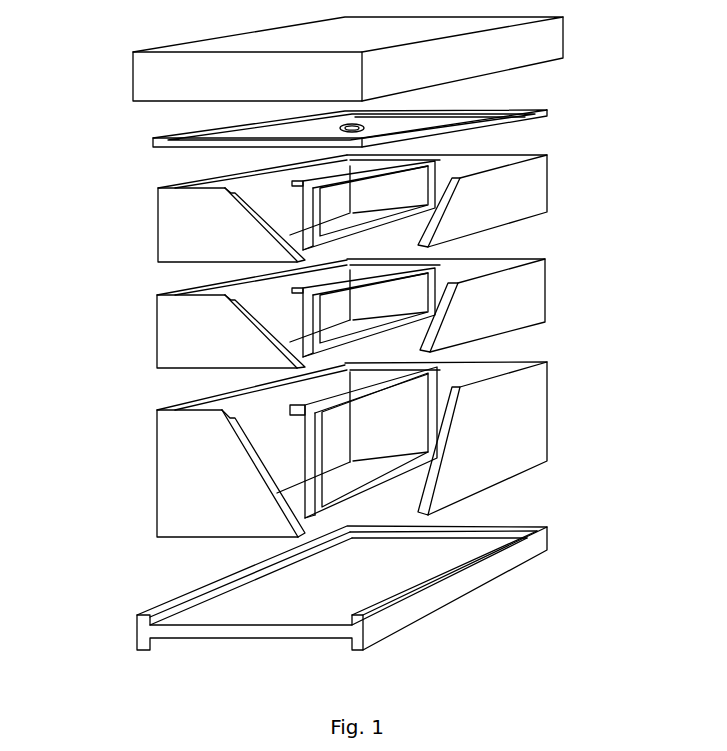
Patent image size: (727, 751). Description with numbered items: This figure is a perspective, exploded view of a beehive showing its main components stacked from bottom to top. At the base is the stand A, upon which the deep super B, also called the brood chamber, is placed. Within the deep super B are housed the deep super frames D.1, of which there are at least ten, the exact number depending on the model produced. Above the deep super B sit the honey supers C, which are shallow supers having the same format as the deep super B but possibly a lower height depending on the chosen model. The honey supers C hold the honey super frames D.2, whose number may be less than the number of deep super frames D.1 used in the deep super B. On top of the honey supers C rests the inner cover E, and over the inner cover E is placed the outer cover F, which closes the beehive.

The stand A is at (392, 562).
The deep super B is at (212, 466).
The honey supers C is at (213, 222).
The deep super frame D.1 is at (443, 414).
The honey supers frame D.2 is at (442, 277).
The inner cover E is at (570, 117).
The outer cover F is at (483, 45).